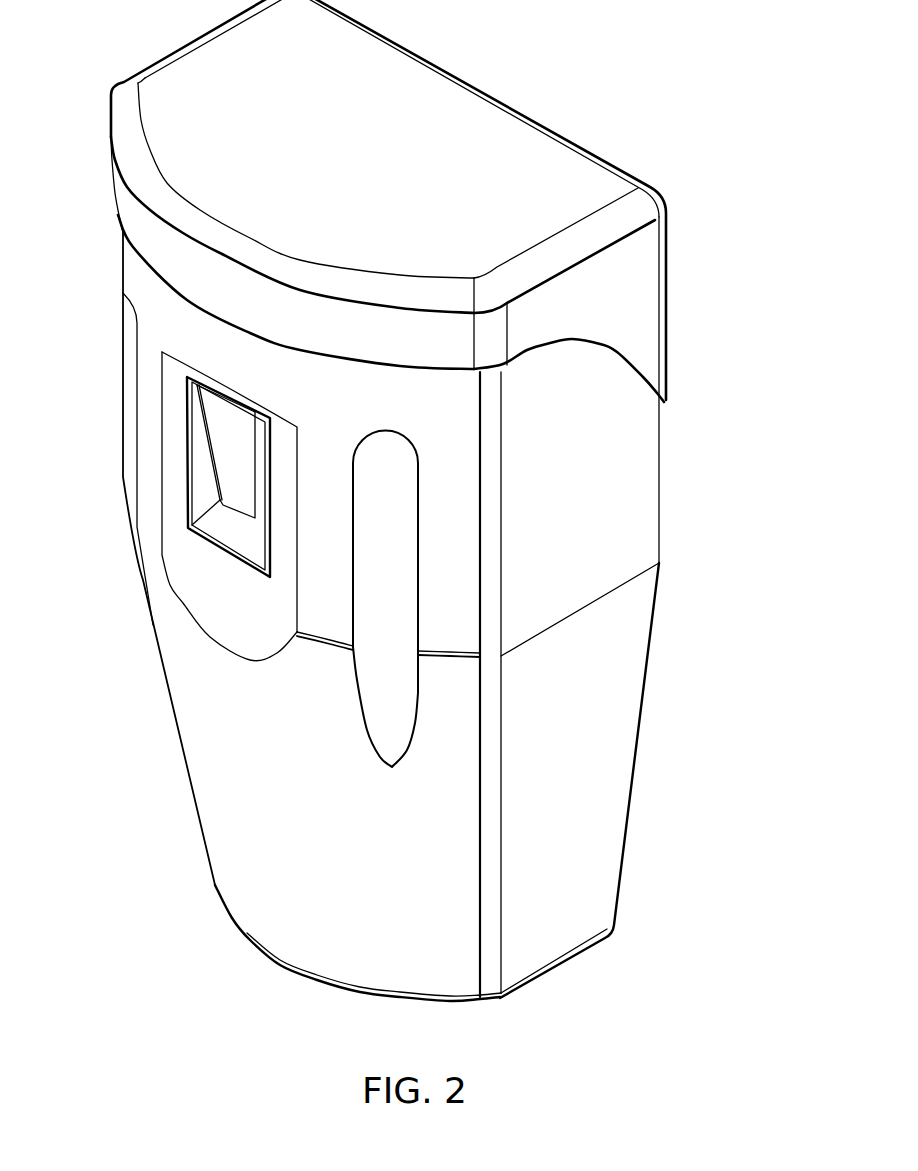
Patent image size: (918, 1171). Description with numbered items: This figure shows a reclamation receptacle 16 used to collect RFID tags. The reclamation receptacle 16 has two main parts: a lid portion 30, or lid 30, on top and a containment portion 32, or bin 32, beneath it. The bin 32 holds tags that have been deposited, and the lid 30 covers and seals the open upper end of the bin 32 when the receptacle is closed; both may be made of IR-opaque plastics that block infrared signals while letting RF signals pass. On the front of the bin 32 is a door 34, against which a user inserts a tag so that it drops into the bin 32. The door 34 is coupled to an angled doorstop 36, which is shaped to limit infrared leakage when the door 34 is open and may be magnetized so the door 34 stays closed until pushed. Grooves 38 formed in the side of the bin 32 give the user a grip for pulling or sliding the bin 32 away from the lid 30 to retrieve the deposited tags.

The reclamation receptacle 16 is at (677, 68).
The lid portion 30 is at (578, 175).
The containment portion 32 is at (645, 478).
The door 34 is at (223, 433).
The angled doorstop 36 is at (223, 525).
The grooves 38 is at (130, 365).